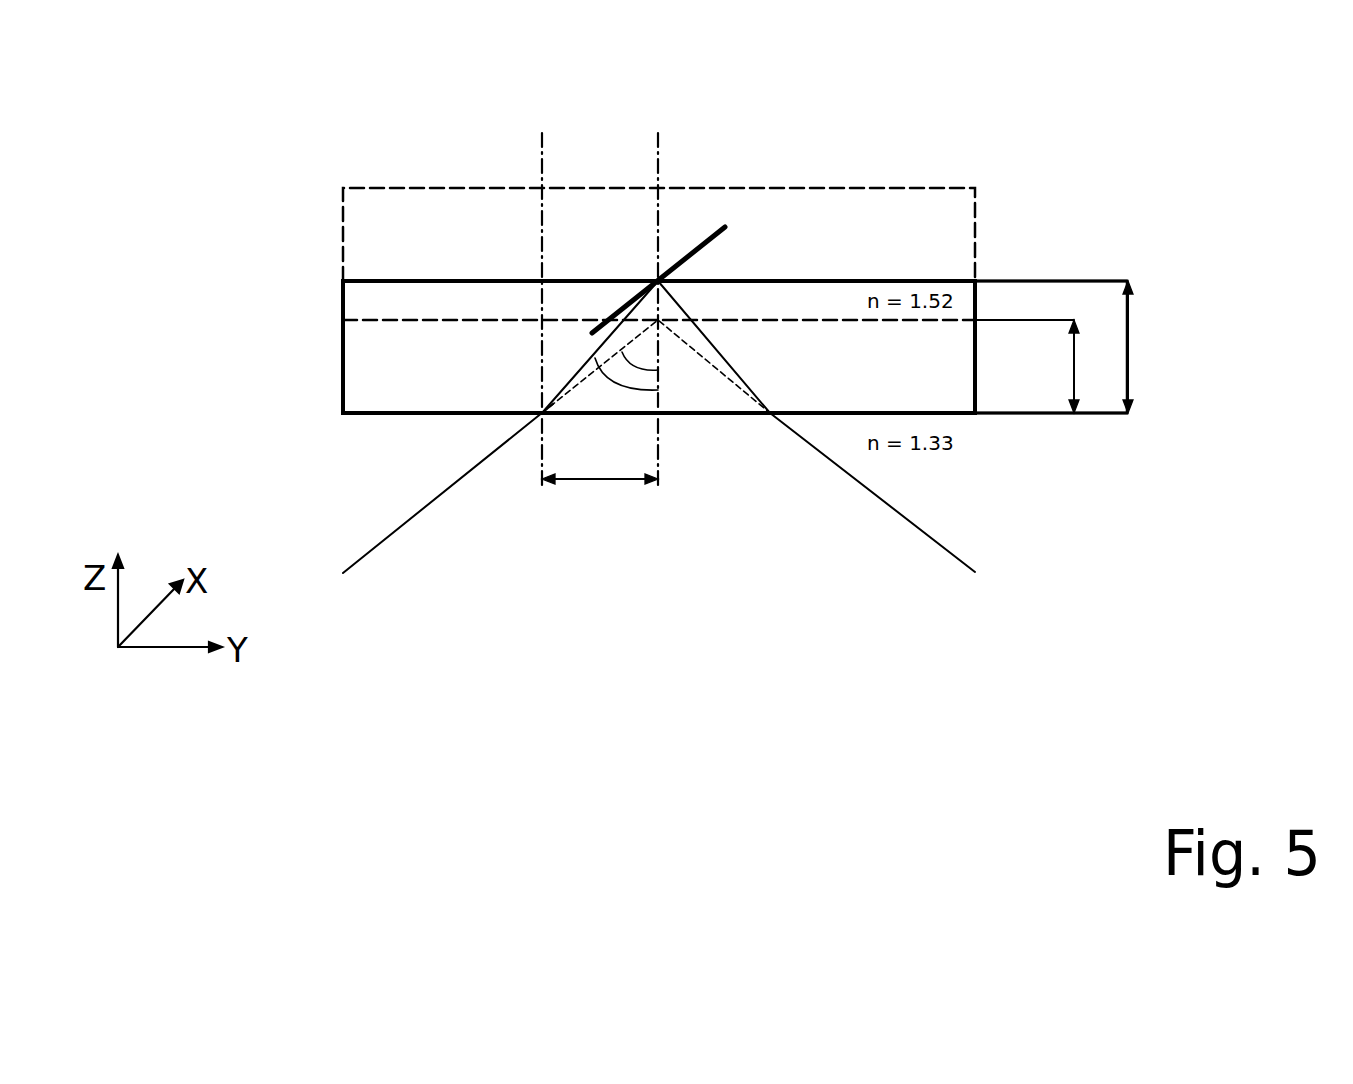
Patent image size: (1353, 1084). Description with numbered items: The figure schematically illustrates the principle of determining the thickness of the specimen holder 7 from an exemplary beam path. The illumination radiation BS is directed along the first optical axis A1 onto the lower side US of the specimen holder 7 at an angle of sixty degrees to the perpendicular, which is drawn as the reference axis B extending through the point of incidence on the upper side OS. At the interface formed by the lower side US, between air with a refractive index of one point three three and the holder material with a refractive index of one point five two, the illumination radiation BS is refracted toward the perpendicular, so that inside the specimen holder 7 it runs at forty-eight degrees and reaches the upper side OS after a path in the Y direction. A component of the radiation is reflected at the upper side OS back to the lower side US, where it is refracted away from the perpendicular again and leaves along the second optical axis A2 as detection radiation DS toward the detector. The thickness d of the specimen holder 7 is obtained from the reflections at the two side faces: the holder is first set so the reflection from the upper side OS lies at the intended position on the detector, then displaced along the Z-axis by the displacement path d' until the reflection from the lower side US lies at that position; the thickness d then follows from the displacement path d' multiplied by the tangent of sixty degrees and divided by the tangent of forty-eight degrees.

The specimen holder 7 is at (343, 348).
The upper side (first side face) OS is at (331, 281).
The lower side (second side face) US is at (331, 413).
The reference axis B is at (663, 142).
The first optical axis A1 is at (467, 473).
The second optical axis A2 is at (884, 500).
The illumination radiation BS is at (386, 538).
The detection radiation DS is at (937, 543).
The thickness d is at (1153, 347).
The displacement path d' is at (1048, 366).